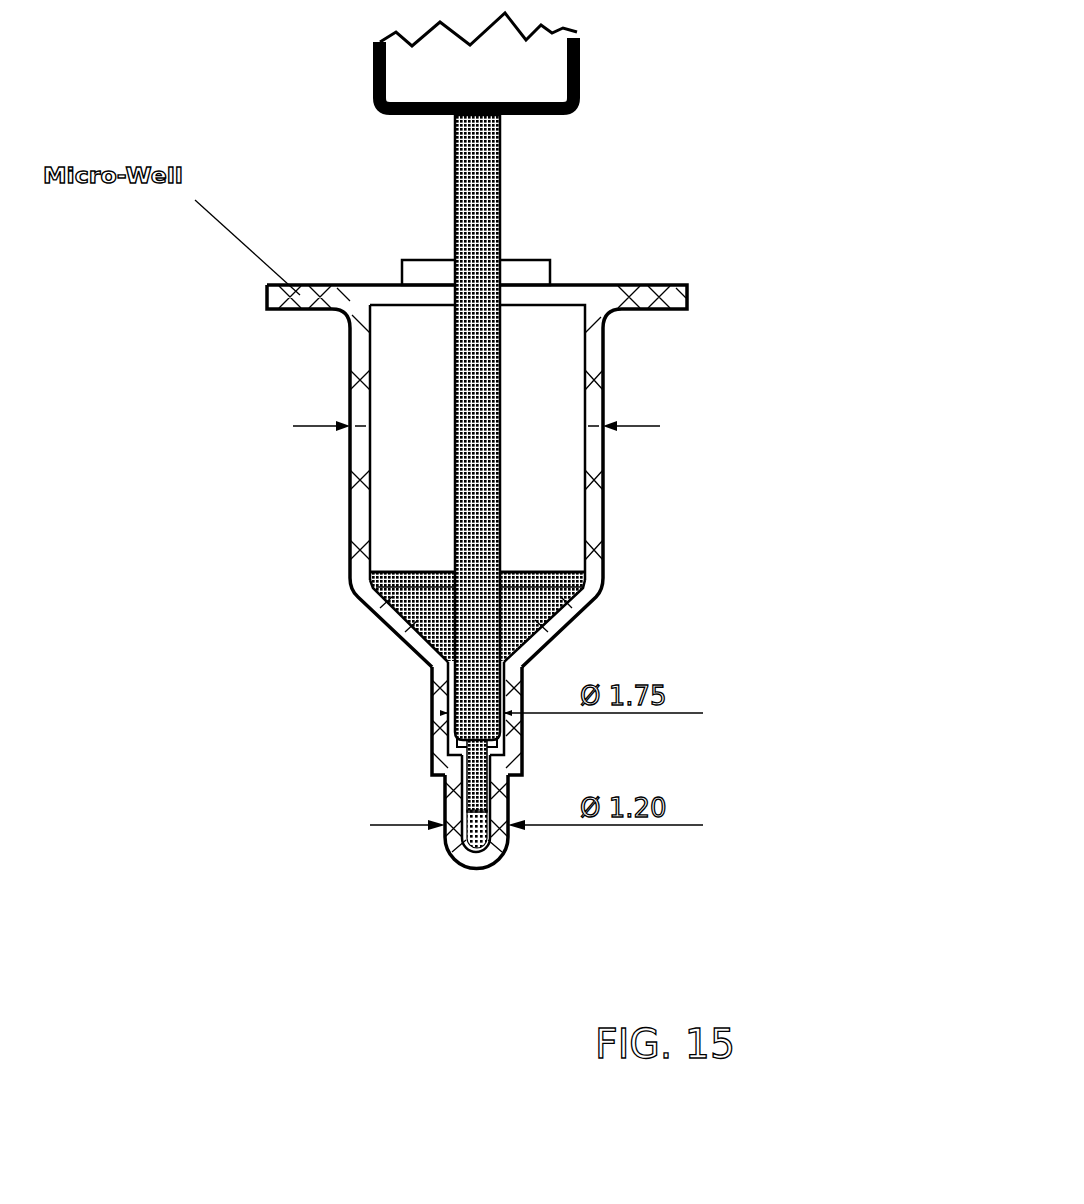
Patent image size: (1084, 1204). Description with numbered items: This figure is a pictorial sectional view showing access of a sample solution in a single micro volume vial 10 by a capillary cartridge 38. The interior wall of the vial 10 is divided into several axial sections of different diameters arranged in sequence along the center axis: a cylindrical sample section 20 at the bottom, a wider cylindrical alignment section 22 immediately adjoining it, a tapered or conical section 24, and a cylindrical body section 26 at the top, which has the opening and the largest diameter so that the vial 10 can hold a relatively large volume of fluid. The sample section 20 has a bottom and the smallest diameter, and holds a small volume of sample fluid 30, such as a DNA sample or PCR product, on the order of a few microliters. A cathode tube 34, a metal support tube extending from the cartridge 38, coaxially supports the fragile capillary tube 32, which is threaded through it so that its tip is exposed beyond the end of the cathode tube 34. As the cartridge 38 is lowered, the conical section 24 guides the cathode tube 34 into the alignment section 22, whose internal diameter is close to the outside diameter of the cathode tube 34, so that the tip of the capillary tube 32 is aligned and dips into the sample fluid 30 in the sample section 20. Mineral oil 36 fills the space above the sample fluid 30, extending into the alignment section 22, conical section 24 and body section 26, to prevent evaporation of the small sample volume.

The micro volume vial 10 is at (508, 577).
The cylindrical sample section 20 is at (510, 802).
The cylindrical alignment section 22 is at (517, 728).
The tapered or conical section 24 is at (540, 630).
The cylindrical body section 26 is at (604, 503).
The sample fluid 30 is at (477, 820).
The capillary tube 32 is at (448, 750).
The cathode tube 34 is at (473, 430).
The mineral oil 36 is at (430, 600).
The capillary cartridge 38 is at (580, 68).